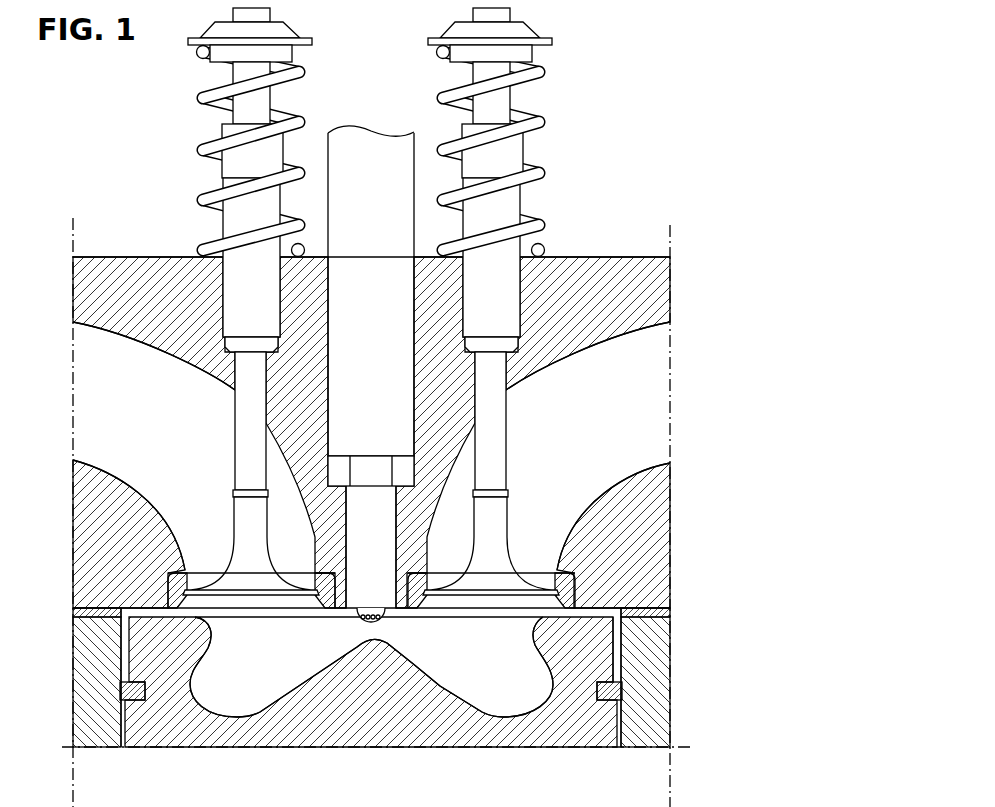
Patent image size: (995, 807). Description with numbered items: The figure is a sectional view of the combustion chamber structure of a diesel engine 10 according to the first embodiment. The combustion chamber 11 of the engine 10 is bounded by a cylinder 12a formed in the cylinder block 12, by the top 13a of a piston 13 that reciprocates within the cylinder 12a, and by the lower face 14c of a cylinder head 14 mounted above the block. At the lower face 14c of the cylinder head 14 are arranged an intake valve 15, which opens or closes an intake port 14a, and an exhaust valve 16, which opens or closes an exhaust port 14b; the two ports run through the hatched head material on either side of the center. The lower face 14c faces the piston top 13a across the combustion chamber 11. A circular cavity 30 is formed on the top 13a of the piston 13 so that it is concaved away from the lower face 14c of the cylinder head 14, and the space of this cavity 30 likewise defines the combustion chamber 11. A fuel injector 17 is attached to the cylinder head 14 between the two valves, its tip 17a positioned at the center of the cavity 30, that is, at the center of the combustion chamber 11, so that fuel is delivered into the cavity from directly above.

The engine 10 is at (104, 141).
The combustion chamber 11 is at (422, 663).
The cylinder block 12 is at (650, 713).
The cylinder 12a is at (625, 648).
The piston 13 is at (460, 730).
The top of piston 13a is at (580, 618).
The cylinder head 14 is at (594, 270).
The intake port 14a is at (154, 446).
The exhaust port 14b is at (588, 446).
The lower face of cylinder head 14c is at (597, 607).
The intake valve 15 is at (240, 560).
The exhaust valve 16 is at (508, 572).
The fuel injector 17 is at (376, 150).
The tip of fuel injector 17a is at (362, 620).
The circular cavity 30 is at (371, 667).